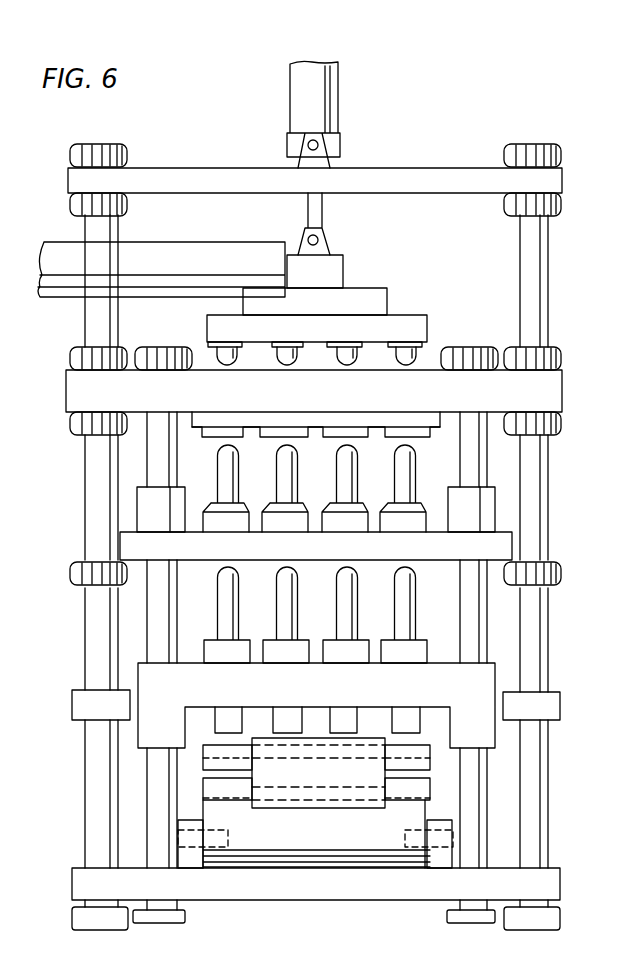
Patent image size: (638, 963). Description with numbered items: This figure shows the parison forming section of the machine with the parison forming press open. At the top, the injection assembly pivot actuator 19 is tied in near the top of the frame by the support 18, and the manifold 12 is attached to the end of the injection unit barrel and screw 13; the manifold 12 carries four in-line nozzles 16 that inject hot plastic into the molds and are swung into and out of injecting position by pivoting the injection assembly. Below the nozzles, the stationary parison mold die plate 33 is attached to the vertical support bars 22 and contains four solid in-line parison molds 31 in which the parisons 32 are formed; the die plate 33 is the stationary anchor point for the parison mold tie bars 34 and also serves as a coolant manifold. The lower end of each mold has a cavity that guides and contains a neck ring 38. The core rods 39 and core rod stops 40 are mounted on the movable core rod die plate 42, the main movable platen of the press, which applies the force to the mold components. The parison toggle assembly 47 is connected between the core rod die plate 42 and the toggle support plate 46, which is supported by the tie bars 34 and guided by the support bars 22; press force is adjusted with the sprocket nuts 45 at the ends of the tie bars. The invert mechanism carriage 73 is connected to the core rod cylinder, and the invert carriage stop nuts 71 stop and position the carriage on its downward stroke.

The manifold 12 is at (424, 293).
The barrel and screw 13 is at (62, 245).
The nozzles 16 is at (408, 367).
The support 18 is at (449, 167).
The injection assembly pivot actuator 19 is at (327, 80).
The vertical support bars 22 is at (548, 263).
The parison molds 31 is at (420, 433).
The parisons 32 is at (400, 470).
The parison mold die plate 33 is at (552, 392).
The parison mold tie bars 34 is at (490, 815).
The neck ring 38 is at (410, 525).
The core rods 39 is at (410, 617).
The core rod stops 40 is at (405, 657).
The core rod die plate 42 is at (485, 680).
The sprocket nuts 45 is at (455, 918).
The toggle support plate 46 is at (552, 882).
The parison toggle assembly 47 is at (425, 810).
The invert carriage stop nuts 71 is at (558, 580).
The invert mechanism carriage 73 is at (507, 545).